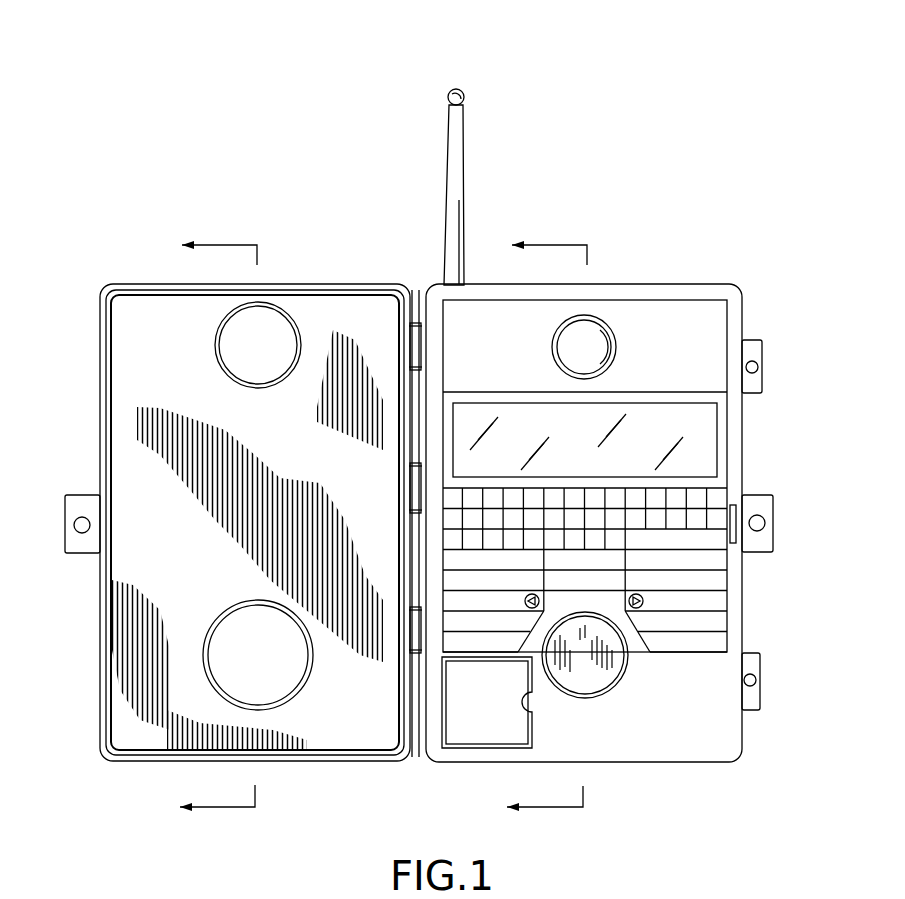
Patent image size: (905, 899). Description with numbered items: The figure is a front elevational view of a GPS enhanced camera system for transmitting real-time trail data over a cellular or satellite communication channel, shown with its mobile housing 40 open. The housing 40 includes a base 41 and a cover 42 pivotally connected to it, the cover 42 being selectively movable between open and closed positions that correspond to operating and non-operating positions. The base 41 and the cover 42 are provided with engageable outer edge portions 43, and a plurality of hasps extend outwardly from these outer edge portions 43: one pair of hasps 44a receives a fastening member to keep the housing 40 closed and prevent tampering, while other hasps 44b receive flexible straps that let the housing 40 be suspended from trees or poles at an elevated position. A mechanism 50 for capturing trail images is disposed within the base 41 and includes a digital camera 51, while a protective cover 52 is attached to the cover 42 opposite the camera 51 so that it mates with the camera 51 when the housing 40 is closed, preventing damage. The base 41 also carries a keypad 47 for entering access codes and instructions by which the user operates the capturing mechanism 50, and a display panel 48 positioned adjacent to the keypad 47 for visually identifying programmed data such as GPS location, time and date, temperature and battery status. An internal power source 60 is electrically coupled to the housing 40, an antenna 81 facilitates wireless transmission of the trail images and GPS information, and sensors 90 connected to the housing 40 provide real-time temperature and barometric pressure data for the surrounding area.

The mobile housing 40 is at (262, 80).
The base 41 is at (700, 287).
The cover 42 is at (315, 285).
The outer edge portions 43 is at (100, 312).
The hasps 44a is at (72, 495).
The hasps 44b is at (760, 340).
The keypad 47 is at (727, 625).
The display panel 48 is at (690, 440).
The capturing mechanism 50 is at (590, 315).
The digital camera 51 is at (584, 347).
The protective cover 52 is at (260, 345).
The internal power source 60 is at (465, 723).
The antenna 81 is at (448, 148).
The sensors 90 is at (598, 685).